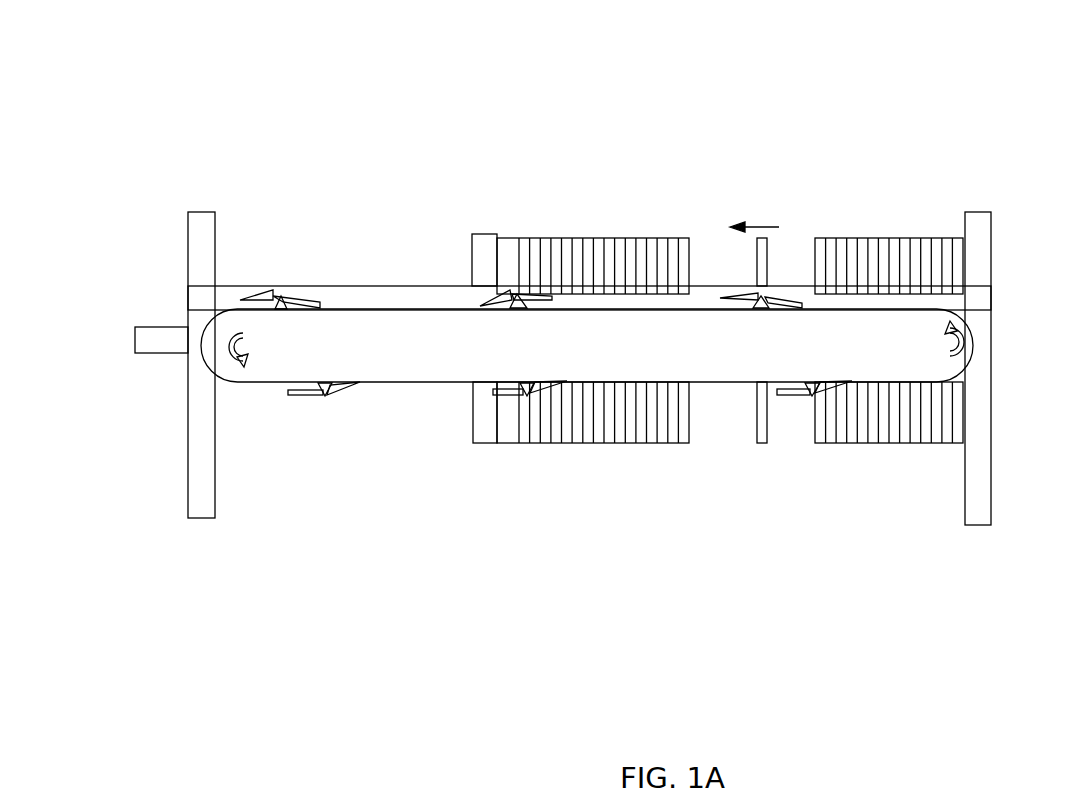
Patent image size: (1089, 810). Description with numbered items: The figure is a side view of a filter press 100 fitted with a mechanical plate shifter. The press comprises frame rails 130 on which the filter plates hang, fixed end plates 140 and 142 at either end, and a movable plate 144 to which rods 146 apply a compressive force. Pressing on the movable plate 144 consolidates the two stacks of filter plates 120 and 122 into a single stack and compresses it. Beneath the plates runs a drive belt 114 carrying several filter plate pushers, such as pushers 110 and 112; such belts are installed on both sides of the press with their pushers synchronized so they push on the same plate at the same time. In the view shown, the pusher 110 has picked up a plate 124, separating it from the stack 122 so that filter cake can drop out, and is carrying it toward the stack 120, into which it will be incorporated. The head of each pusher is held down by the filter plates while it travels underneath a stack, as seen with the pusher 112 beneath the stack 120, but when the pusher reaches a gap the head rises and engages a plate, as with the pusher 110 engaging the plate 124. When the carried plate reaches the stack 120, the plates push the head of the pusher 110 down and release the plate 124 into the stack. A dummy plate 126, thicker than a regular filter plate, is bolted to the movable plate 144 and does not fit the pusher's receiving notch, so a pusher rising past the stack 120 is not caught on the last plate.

The filter press 100 is at (444, 116).
The filter plate pusher 110 is at (757, 293).
The filter plate pusher 112 is at (510, 298).
The drive belt 114 is at (393, 360).
The stack of filter plates 120 is at (553, 420).
The stack of filter plates 122 is at (902, 422).
The filter plate 124 is at (763, 418).
The dummy plate 126 is at (510, 420).
The frame rails 130 is at (362, 298).
The fixed end plate 140 is at (185, 276).
The fixed end plate 142 is at (977, 365).
The movable plate 144 is at (480, 243).
The rods 146 is at (170, 339).